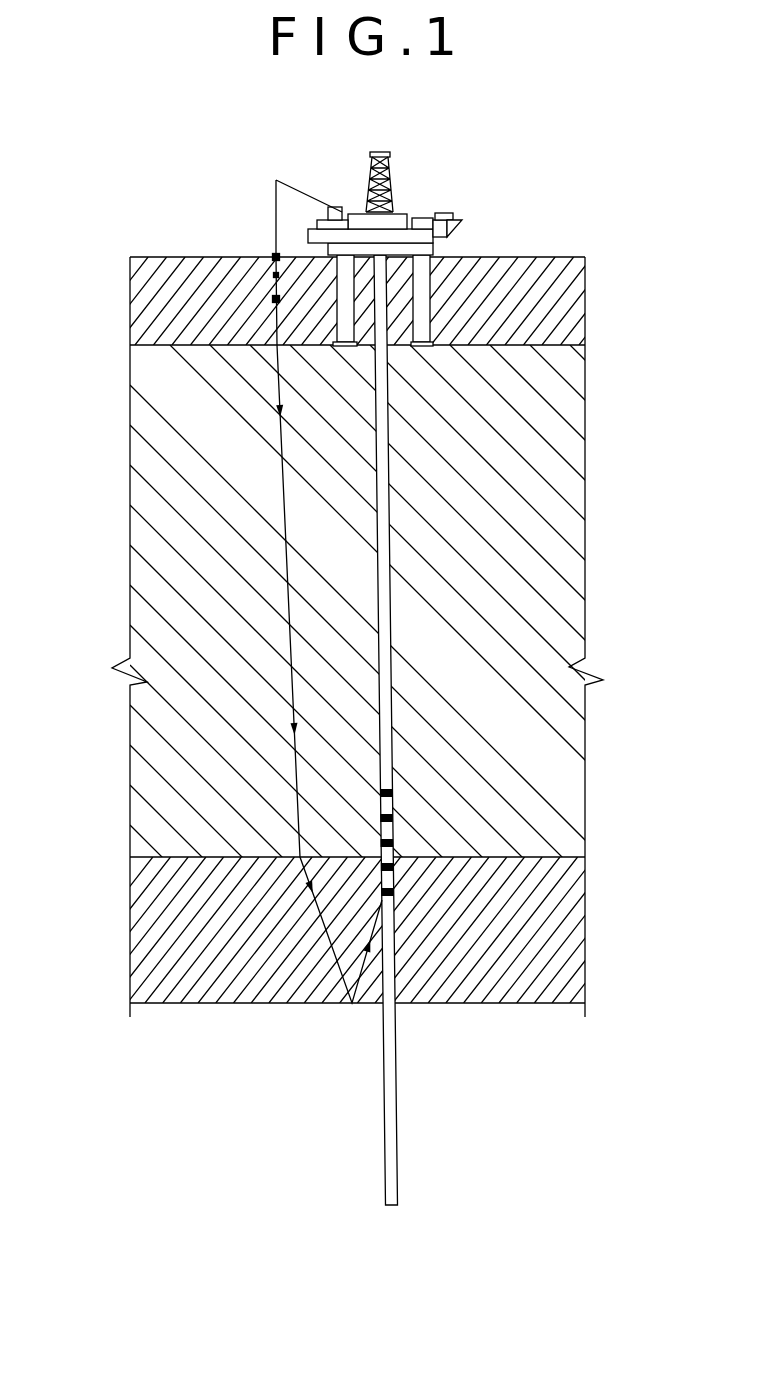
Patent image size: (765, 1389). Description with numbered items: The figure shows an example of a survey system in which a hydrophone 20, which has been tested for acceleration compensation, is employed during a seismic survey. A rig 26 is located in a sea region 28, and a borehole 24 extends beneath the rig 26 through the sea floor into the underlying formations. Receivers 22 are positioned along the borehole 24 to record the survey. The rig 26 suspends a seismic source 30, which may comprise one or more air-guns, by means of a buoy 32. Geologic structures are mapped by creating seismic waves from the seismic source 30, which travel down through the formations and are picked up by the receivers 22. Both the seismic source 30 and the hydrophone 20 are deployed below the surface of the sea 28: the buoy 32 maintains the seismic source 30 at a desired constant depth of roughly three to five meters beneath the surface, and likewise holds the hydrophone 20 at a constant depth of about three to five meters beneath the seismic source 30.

The hydrophone 20 is at (276, 299).
The receivers 22 is at (392, 792).
The borehole 24 is at (392, 716).
The rig 26 is at (428, 183).
The sea region 28 is at (527, 273).
The seismic source 30 is at (276, 275).
The buoy 32 is at (276, 256).